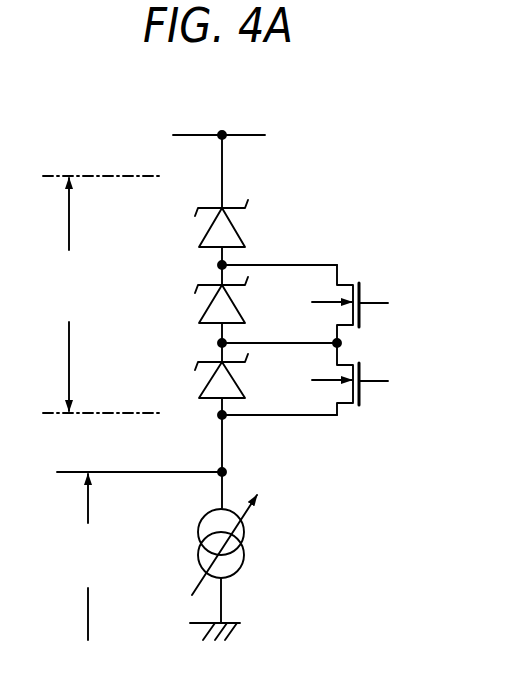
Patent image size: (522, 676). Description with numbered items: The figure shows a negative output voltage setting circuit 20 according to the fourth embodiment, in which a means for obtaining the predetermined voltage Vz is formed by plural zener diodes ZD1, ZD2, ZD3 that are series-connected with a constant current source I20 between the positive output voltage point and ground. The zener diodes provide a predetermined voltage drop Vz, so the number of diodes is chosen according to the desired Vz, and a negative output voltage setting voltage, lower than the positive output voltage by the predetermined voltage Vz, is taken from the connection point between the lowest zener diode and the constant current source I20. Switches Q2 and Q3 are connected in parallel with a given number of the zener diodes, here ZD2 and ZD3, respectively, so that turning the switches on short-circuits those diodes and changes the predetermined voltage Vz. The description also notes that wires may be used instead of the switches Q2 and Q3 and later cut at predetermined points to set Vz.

The negative output voltage setting circuit 20 is at (91, 120).
The zener diode ZD1 is at (190, 227).
The zener diode ZD2 is at (190, 304).
The zener diode ZD3 is at (190, 380).
The switch Q2 is at (363, 304).
The switch Q3 is at (363, 379).
The constant current source I20 is at (250, 562).